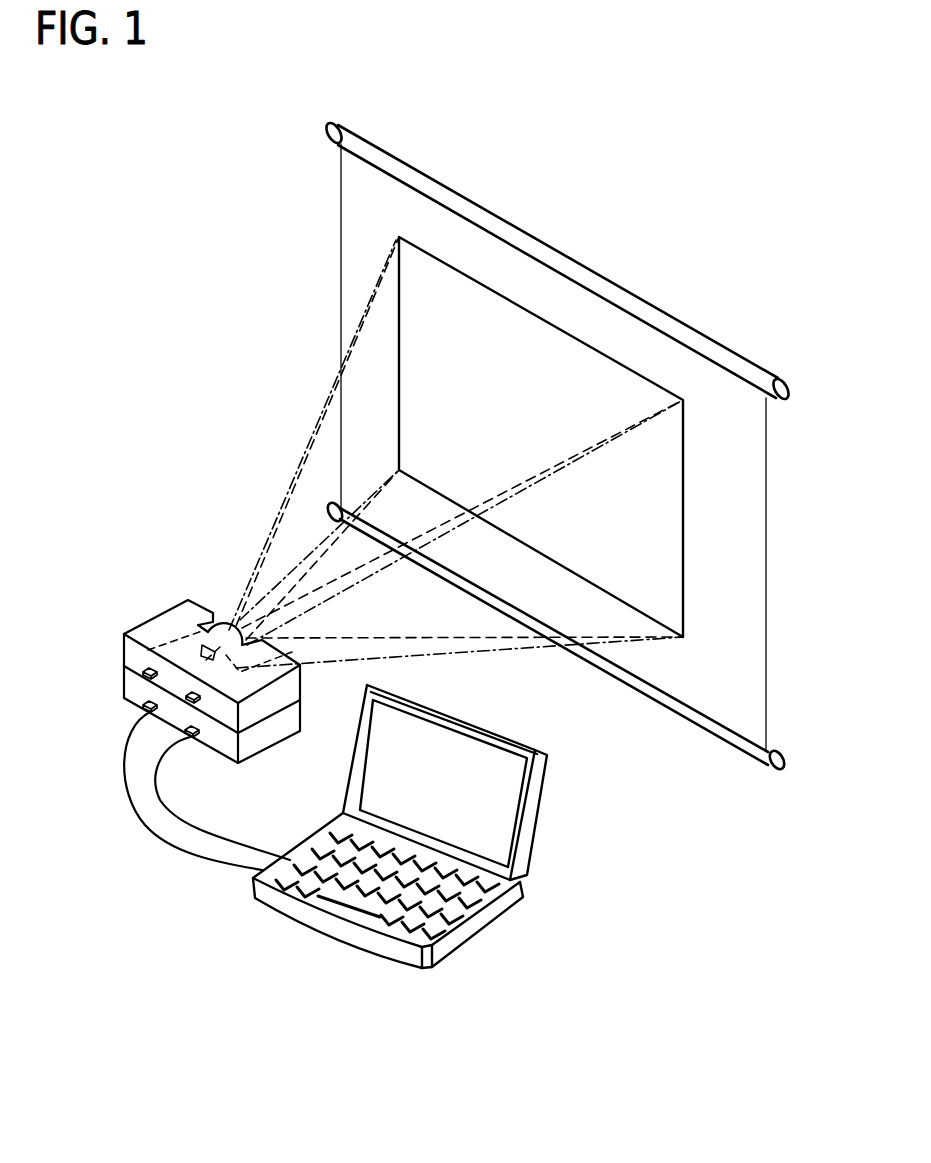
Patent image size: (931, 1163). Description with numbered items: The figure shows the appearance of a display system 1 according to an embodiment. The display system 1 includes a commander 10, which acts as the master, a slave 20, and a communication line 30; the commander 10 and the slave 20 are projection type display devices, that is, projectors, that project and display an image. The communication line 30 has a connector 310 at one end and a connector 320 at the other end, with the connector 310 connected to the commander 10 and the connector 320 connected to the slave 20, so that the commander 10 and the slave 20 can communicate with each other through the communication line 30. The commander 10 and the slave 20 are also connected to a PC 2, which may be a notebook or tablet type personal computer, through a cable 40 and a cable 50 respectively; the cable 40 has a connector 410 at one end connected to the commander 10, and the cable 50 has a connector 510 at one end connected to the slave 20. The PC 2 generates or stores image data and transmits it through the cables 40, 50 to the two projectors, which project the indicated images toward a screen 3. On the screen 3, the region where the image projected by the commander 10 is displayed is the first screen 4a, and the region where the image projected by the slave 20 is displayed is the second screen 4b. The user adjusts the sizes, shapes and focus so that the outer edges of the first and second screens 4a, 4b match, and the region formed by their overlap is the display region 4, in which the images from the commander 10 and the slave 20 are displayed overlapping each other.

The display system 1 is at (205, 636).
The PC 2 is at (522, 892).
The screen 3 is at (654, 305).
The display region 4 is at (506, 297).
The first screen 4a is at (318, 422).
The second screen 4b is at (285, 511).
The commander 10 is at (158, 606).
The slave 20 is at (125, 694).
The communication line 30 is at (125, 712).
The cable 40 is at (172, 835).
The cable 50 is at (236, 838).
The connector 310 is at (153, 666).
The connector 320 is at (142, 711).
The connector 410 is at (205, 712).
The connector 510 is at (194, 740).